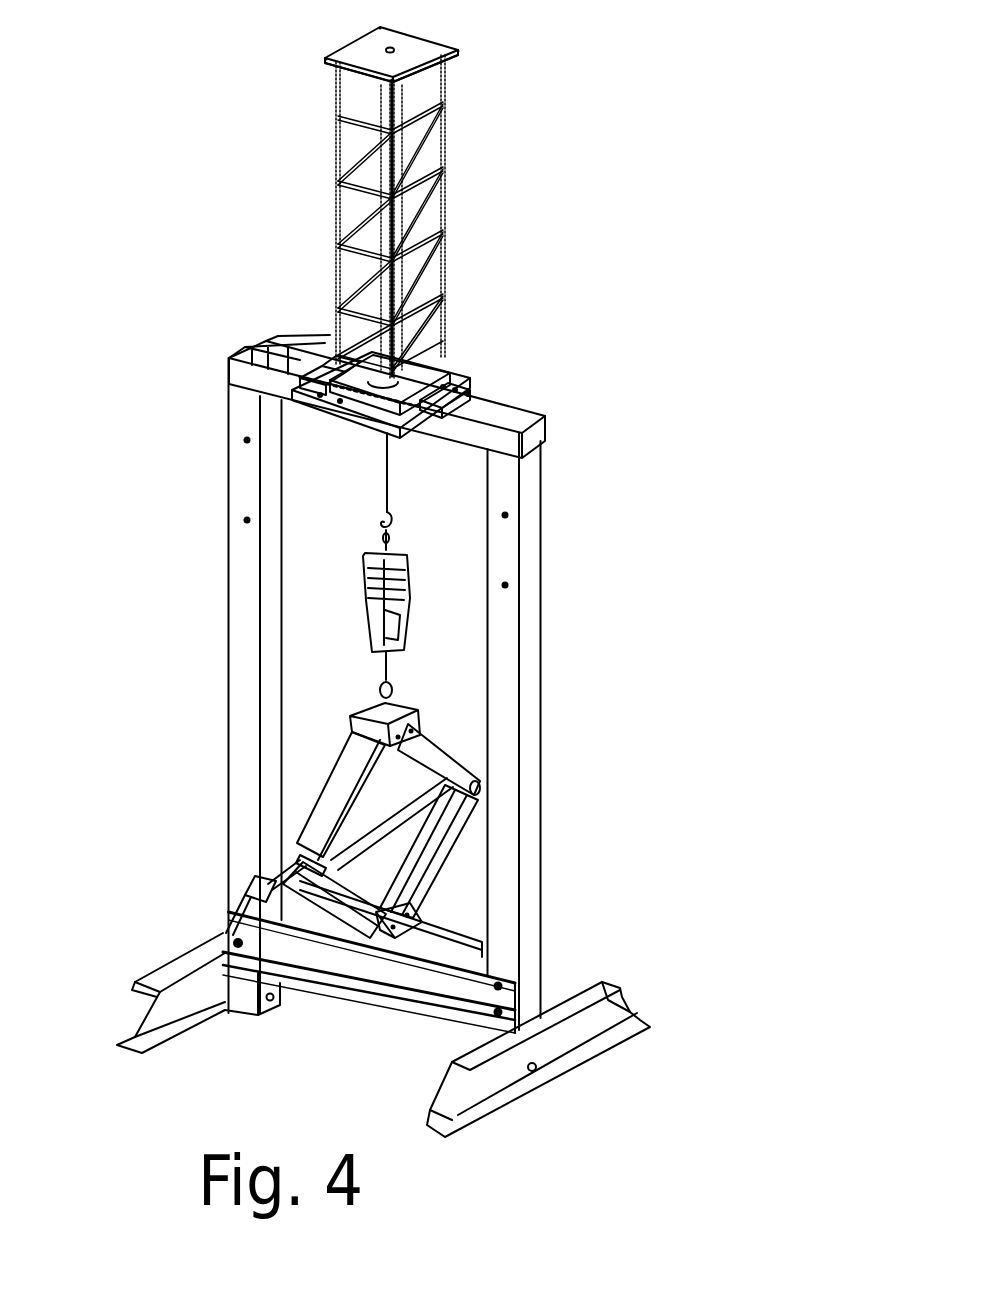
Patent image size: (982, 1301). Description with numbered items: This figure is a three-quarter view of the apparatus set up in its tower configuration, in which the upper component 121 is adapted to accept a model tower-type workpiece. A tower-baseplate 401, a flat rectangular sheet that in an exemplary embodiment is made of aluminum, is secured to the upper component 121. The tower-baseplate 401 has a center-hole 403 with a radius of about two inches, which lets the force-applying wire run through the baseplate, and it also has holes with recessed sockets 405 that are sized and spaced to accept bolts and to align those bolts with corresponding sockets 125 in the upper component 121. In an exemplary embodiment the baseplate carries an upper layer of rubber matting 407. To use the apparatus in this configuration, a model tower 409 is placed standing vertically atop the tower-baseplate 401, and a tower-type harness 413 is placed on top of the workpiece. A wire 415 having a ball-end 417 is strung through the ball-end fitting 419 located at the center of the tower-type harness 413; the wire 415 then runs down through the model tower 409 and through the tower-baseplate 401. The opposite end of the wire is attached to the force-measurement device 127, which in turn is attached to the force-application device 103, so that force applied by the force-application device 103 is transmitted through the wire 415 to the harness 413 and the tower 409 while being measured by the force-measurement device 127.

The force-application device 103 is at (337, 768).
The upper component 121 is at (540, 408).
The sockets in the upper component 125 is at (267, 340).
The force-measurement device 127 is at (358, 605).
The tower-baseplate 401 is at (463, 380).
The center-hole 403 is at (420, 360).
The holes with recessed sockets 405 is at (360, 357).
The upper layer of rubber matting 407 is at (450, 372).
The model tower 409 is at (437, 219).
The tower-type harness 413 is at (325, 58).
The wire 415 is at (390, 120).
The ball-end 417 is at (392, 50).
The ball-end fitting 419 is at (395, 79).